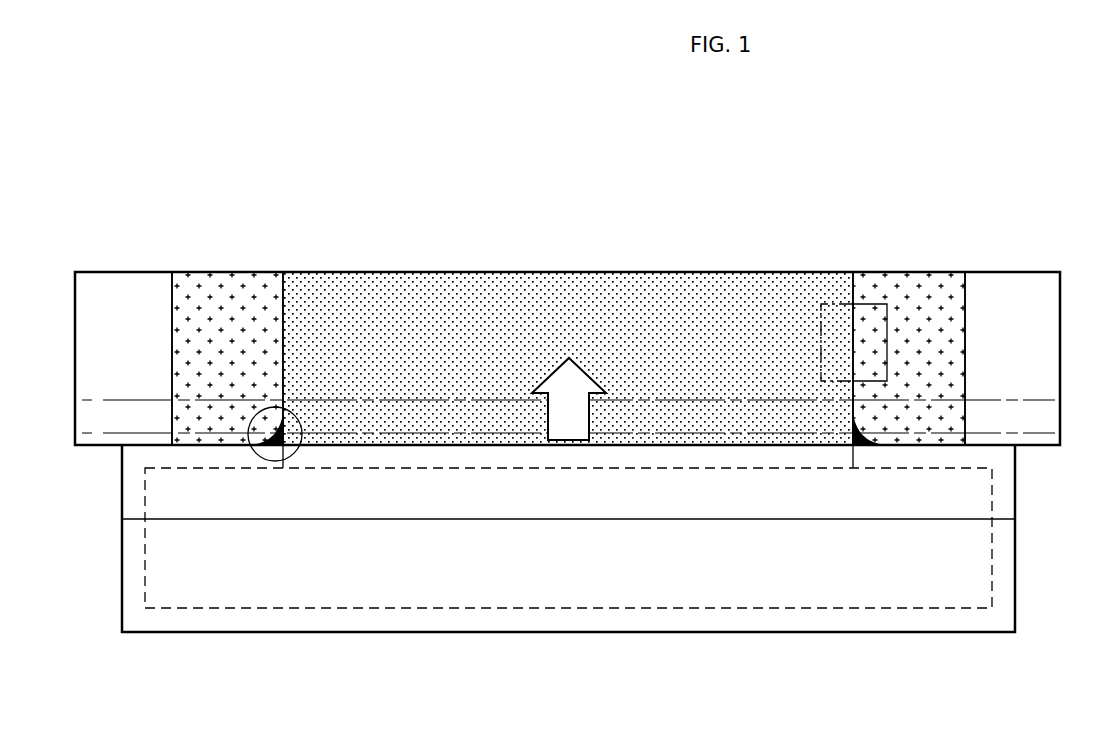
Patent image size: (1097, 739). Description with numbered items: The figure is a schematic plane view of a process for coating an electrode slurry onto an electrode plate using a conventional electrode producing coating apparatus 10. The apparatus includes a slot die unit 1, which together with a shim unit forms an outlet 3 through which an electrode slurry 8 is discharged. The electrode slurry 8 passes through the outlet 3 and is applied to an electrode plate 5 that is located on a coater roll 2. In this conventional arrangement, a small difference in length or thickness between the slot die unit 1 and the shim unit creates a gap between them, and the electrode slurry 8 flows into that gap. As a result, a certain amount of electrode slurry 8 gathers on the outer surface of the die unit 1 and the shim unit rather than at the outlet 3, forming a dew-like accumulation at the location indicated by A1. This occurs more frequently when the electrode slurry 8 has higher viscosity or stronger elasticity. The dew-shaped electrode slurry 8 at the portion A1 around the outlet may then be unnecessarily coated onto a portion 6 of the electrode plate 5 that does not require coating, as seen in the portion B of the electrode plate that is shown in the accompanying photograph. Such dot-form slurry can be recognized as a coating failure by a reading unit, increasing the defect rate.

The electrode producing coating apparatus 10 is at (137, 142).
The slot die unit 1 is at (1015, 565).
The coater roll 2 is at (1013, 300).
The outlet 3 is at (660, 445).
The electrode plate 5 is at (164, 327).
The portion of electrode plate 6 is at (222, 298).
The electrode slurry 8 is at (325, 298).
The dew-shaped slurry portion A1 is at (271, 408).
The portion of electrode plate B is at (871, 304).